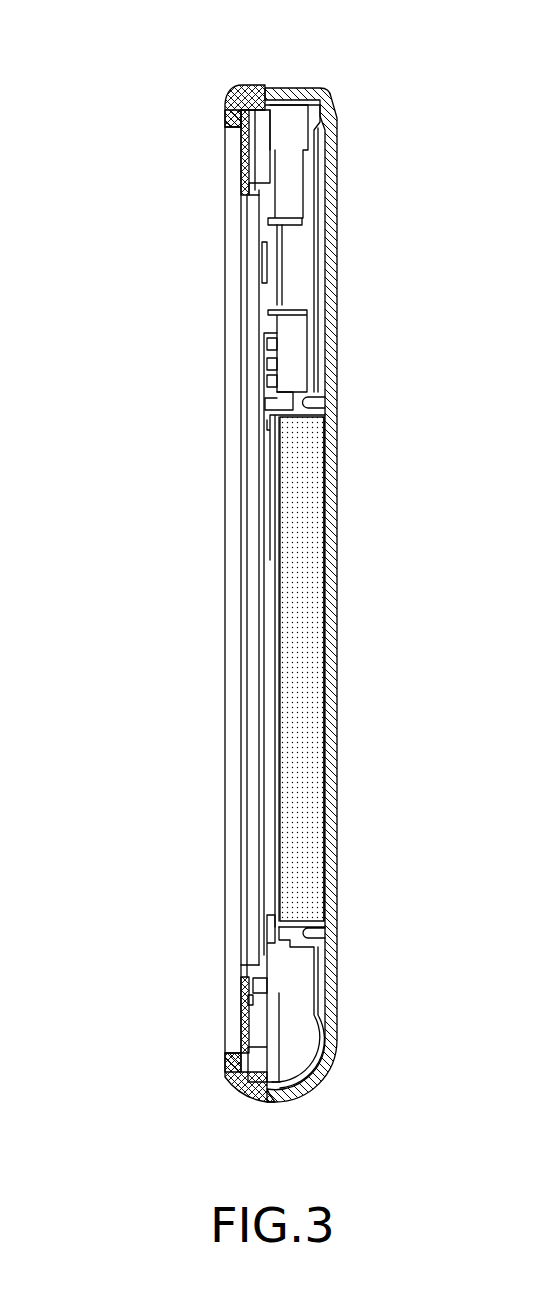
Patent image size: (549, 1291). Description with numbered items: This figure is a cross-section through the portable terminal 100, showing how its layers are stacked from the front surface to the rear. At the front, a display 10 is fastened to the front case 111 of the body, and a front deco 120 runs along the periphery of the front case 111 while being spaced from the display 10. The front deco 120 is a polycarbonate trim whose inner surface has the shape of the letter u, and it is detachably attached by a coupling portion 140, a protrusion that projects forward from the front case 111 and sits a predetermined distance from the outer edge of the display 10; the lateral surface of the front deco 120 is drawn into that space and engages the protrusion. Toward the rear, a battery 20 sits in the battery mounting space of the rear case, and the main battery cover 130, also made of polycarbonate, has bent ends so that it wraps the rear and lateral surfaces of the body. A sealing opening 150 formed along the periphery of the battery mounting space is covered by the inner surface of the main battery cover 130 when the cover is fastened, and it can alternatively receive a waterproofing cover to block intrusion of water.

The portable terminal 100 is at (97, 107).
The display 10 is at (233, 636).
The battery 20 is at (308, 752).
The front case 111 is at (245, 88).
The front deco 120 is at (228, 125).
The main battery cover 130 is at (334, 262).
The coupling portion 140 is at (228, 113).
The sealing opening 150 is at (318, 403).